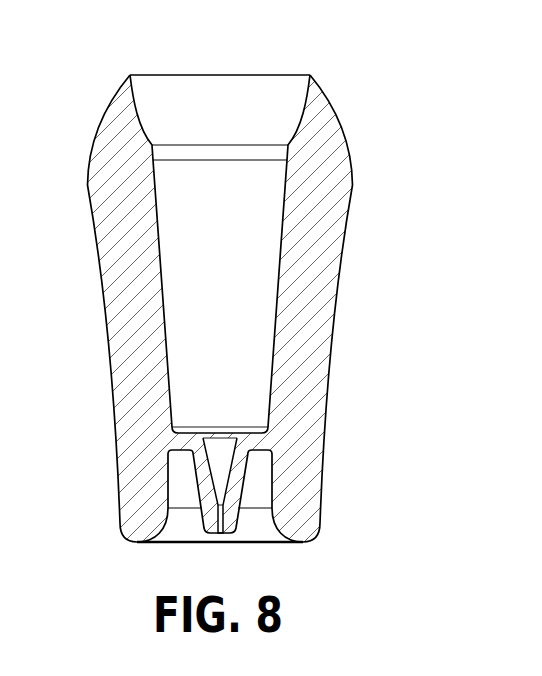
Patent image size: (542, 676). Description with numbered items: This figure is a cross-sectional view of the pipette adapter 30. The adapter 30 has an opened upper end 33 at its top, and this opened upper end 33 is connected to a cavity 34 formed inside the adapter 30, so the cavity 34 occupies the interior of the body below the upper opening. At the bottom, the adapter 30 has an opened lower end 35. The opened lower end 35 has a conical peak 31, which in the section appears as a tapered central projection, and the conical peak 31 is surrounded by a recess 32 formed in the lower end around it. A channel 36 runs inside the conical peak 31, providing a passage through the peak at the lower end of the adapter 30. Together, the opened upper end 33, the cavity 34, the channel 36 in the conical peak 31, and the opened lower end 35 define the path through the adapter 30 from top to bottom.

The pipette adapter 30 is at (339, 283).
The conical peak 31 is at (230, 523).
The recess 32 is at (273, 480).
The opened upper end 33 is at (320, 82).
The cavity 34 is at (182, 350).
The opened lower end 35 is at (137, 541).
The channel 36 is at (223, 449).